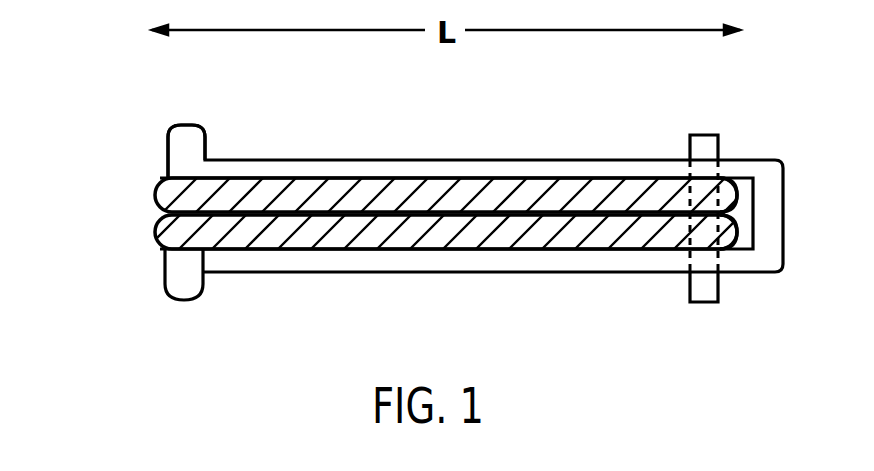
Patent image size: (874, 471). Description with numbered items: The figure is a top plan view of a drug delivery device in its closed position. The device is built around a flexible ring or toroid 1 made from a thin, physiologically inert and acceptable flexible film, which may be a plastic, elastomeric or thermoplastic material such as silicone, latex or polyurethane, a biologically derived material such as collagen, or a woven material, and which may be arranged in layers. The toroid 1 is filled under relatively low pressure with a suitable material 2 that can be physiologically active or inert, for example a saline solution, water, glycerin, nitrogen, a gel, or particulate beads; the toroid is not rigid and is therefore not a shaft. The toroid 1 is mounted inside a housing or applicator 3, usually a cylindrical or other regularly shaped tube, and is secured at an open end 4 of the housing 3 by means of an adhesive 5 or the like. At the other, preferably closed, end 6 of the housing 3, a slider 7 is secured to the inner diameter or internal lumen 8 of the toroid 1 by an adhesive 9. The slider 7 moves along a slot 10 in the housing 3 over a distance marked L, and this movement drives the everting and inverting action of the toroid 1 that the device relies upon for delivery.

The toroid 1 is at (415, 248).
The filling material 2 is at (422, 190).
The housing 3 is at (377, 167).
The open end 4 is at (163, 262).
The adhesive 5 is at (202, 272).
The closed end 6 is at (768, 232).
The slider 7 is at (710, 293).
The internal lumen 8 is at (555, 250).
The adhesive 9 is at (723, 213).
The slot 10 is at (688, 158).